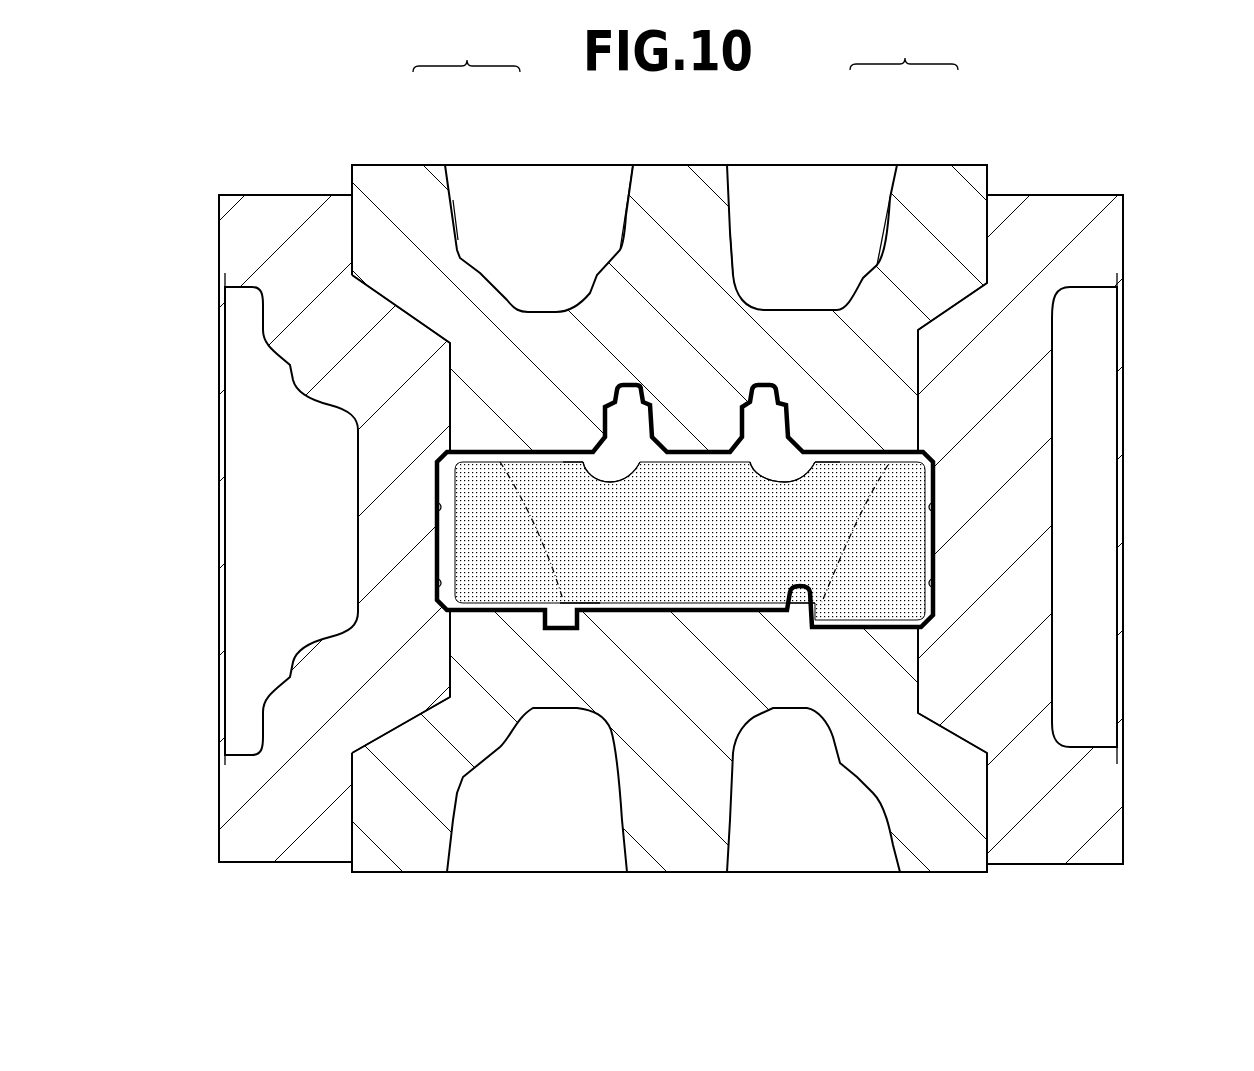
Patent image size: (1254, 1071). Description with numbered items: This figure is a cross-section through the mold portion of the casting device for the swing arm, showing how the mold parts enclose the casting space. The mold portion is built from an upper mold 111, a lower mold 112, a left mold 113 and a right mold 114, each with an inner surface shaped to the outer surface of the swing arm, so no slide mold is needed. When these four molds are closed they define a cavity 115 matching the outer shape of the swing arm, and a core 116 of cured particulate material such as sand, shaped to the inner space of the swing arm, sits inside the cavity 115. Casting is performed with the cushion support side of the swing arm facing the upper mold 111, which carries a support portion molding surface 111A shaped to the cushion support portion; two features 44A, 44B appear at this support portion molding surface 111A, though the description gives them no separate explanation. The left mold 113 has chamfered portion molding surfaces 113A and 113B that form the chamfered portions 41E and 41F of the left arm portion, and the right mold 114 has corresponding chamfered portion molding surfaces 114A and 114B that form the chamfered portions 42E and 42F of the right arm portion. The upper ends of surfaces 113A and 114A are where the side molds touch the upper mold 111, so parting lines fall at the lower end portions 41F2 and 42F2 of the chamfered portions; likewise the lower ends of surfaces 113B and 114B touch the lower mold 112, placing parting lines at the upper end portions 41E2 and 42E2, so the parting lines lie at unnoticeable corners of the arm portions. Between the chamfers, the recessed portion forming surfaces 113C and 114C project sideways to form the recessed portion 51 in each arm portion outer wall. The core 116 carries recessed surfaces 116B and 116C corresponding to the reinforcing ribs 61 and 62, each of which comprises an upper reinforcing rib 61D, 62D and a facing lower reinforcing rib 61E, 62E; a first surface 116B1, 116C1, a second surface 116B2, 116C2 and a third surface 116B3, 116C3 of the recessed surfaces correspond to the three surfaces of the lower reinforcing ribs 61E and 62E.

The upper mold 111 is at (690, 190).
The support portion molding surface 111A is at (632, 384).
The lower mold 112 is at (690, 850).
The left mold 113 is at (377, 470).
The chamfered portion molding surface 113A is at (435, 588).
The chamfered portion molding surface 113B is at (435, 482).
The recessed portion forming surface 113C is at (435, 495).
The right mold 114 is at (1035, 483).
The chamfered portion molding surface 114A is at (935, 595).
The chamfered portion molding surface 114B is at (935, 468).
The recessed portion forming surface 114C is at (935, 570).
The cavity 115 is at (800, 445).
The core 116 is at (858, 590).
The recessed surface 116B is at (585, 612).
The first surface 116B1 is at (612, 480).
The second surface 116B2 is at (582, 600).
The third surface 116B3 is at (575, 458).
The recessed surface 116C is at (800, 612).
The first surface 116C1 is at (786, 481).
The second surface 116C2 is at (810, 598).
The third surface 116C3 is at (820, 460).
The chamfered portion 41E is at (440, 620).
The upper end portion 41E2 is at (455, 612).
The chamfered portion 41F is at (437, 455).
The lower end portion 41F2 is at (450, 338).
The chamfered portion 42E is at (918, 640).
The upper end portion 42E2 is at (930, 620).
The chamfered portion 42F is at (933, 452).
The lower end portion 42F2 is at (922, 338).
The first nozzle portion 44A is at (580, 400).
The second nozzle portion 44B is at (764, 385).
The recessed portion 51 is at (435, 557).
The reinforcing rib 61 is at (466, 50).
The upper reinforcing rib 61D is at (495, 462).
The lower reinforcing rib 61E is at (593, 452).
The reinforcing rib 62 is at (904, 49).
The upper reinforcing rib 62D is at (890, 462).
The lower reinforcing rib 62E is at (803, 452).